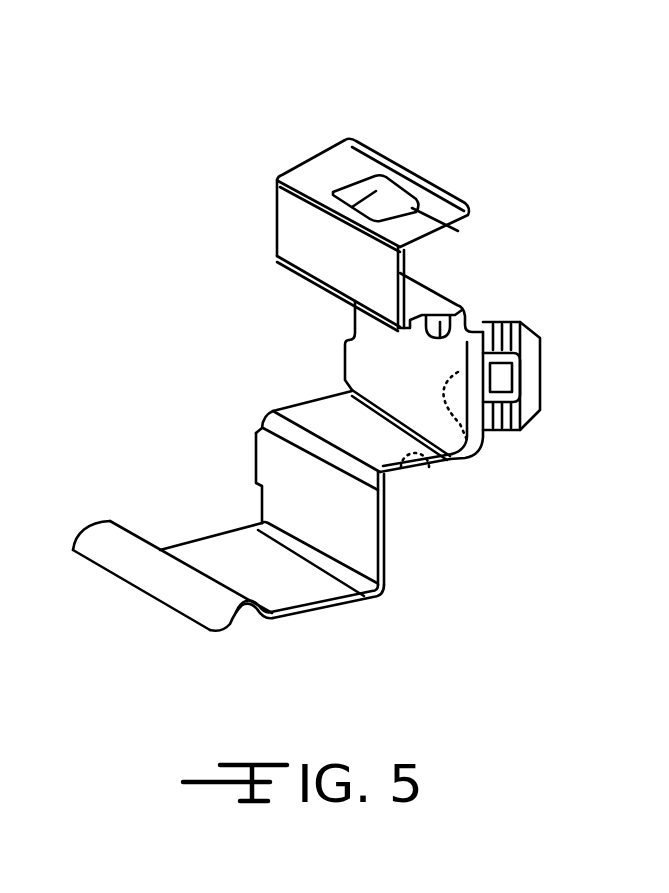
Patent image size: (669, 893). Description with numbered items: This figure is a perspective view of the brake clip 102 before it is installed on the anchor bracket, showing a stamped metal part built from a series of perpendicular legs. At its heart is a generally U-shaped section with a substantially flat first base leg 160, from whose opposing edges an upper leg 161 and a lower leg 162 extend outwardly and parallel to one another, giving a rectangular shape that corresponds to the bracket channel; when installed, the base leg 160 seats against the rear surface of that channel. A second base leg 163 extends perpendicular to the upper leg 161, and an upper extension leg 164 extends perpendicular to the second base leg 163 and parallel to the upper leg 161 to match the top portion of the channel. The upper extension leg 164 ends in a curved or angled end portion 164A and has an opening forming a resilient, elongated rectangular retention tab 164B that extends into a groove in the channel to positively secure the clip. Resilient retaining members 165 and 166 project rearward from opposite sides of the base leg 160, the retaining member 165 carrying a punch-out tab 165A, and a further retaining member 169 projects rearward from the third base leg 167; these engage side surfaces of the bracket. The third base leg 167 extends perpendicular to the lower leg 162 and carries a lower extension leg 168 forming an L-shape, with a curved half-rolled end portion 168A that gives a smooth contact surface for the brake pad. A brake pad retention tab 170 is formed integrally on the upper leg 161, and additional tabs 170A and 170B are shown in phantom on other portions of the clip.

The brake clip 102 is at (210, 215).
The first base leg 160 is at (383, 347).
The upper leg 161 is at (422, 295).
The lower leg 162 is at (322, 415).
The second base leg 163 is at (302, 233).
The upper extension leg 164 is at (330, 182).
The angled end portion 164A is at (396, 158).
The retention tab 164B is at (422, 183).
The retaining member 165 is at (508, 326).
The punch-out tab 165A is at (503, 377).
The retaining member 166 is at (343, 362).
The third base leg 167 is at (352, 527).
The lower extension leg 168 is at (307, 594).
The half-rolled end portion 168A is at (233, 614).
The retaining member 169 is at (253, 463).
The brake pad retention tab 170 is at (432, 346).
The tab 170A is at (450, 463).
The tab 170B is at (467, 440).